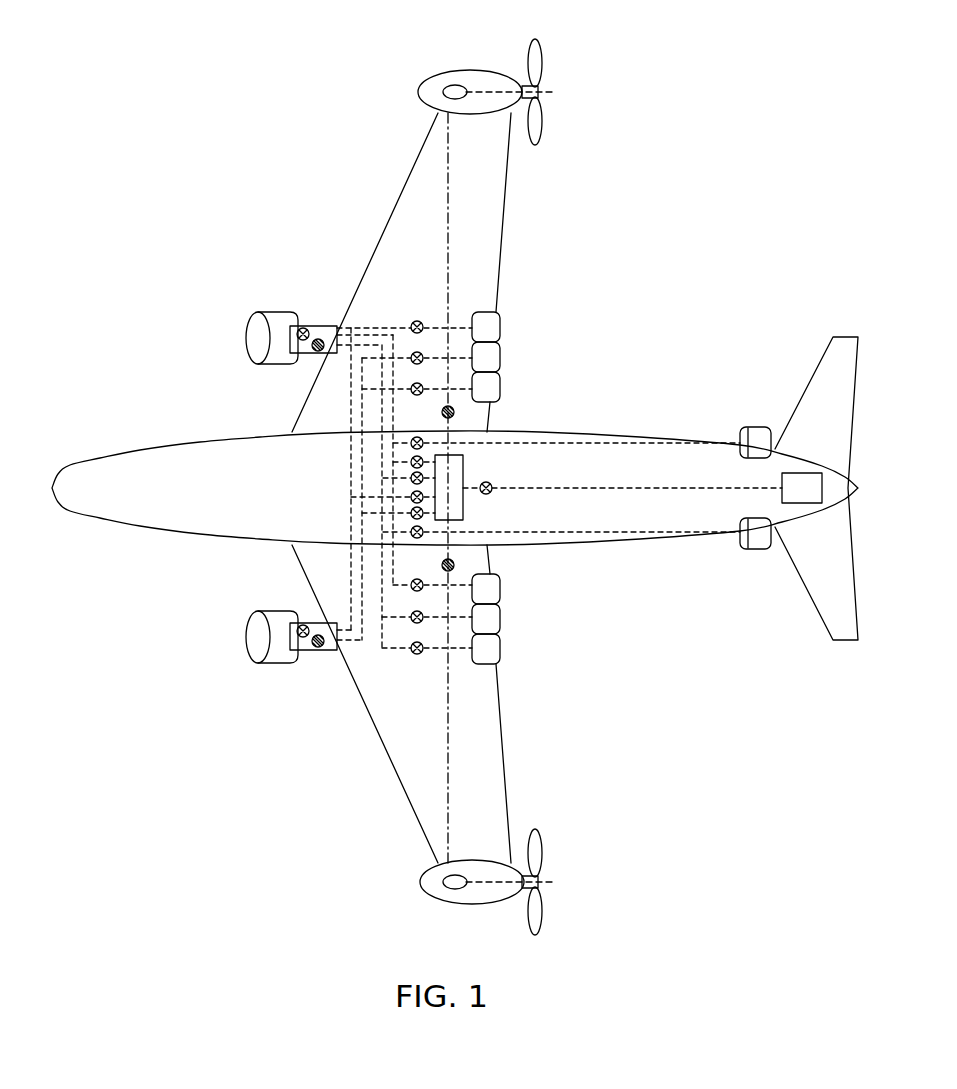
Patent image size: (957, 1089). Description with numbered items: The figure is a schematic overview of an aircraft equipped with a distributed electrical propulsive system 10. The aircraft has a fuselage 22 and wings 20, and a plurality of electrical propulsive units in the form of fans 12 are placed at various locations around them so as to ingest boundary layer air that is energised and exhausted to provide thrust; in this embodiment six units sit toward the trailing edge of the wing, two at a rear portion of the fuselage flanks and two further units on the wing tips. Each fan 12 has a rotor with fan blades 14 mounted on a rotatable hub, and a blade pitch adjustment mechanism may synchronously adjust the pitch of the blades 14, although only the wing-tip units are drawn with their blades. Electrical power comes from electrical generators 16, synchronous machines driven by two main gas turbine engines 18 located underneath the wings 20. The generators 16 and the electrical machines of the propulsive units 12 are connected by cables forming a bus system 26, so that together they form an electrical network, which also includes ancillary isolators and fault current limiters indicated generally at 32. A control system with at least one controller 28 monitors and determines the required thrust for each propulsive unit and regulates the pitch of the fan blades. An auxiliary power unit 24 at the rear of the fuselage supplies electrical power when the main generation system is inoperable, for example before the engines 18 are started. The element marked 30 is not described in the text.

The electrical propulsive system 10 is at (728, 103).
The electrical propulsive unit 12 is at (573, 148).
The fan blade 14 is at (527, 53).
The electrical generator 16 is at (315, 326).
The gas turbine engine 18 is at (246, 337).
The wing 20 is at (415, 190).
The fuselage 22 is at (135, 502).
The auxiliary power unit 24 is at (800, 472).
The bus system 26 is at (310, 512).
The controller 28 is at (464, 498).
The sensor 30 is at (464, 470).
The isolators and fault current limiters 32 is at (412, 312).